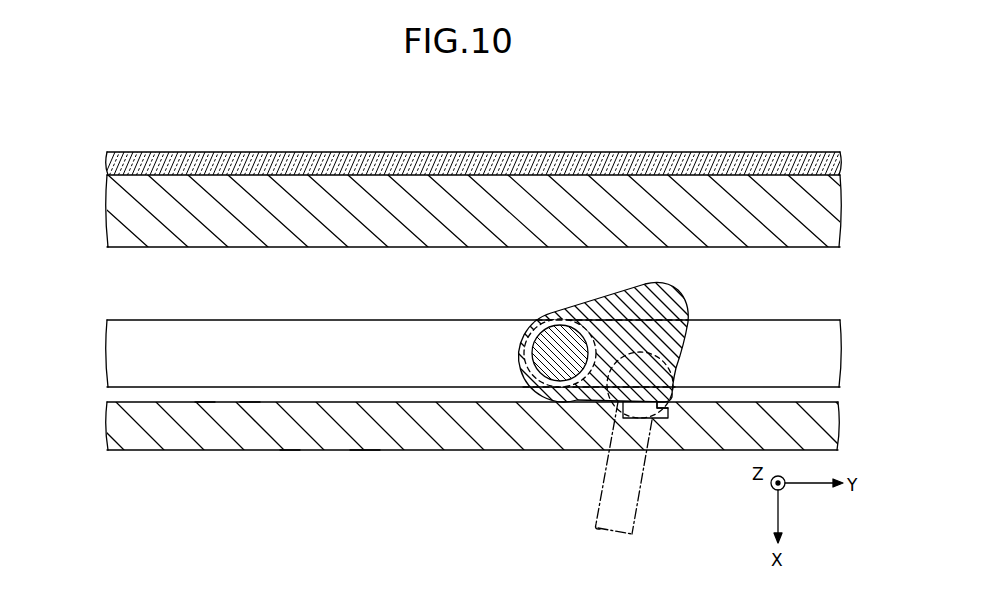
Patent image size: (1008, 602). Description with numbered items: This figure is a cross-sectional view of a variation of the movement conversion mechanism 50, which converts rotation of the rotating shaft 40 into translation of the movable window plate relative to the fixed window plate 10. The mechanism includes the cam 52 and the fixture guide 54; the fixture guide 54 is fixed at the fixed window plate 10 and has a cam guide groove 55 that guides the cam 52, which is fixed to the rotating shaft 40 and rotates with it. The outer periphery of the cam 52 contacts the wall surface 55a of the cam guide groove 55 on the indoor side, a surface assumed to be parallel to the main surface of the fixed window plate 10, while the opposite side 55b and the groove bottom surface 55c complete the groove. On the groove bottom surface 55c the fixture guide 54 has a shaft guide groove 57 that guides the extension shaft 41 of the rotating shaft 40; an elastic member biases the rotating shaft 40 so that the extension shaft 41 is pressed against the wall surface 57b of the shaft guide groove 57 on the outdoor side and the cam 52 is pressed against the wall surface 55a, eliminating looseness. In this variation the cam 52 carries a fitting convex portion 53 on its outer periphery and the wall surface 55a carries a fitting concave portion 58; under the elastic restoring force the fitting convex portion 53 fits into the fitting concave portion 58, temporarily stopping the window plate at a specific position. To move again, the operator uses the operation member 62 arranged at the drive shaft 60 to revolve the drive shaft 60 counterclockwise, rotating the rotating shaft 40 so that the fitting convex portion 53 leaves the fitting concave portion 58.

The fixed window plate 10 is at (330, 158).
The fixture guide 54 is at (423, 192).
The shaft guide groove 57 is at (414, 312).
The wall surface of the shaft guide groove on the outdoor side 57b is at (382, 324).
The cam guide groove 55 is at (316, 502).
The wall surface of the cam guide groove on the indoor side 55a is at (205, 412).
The second layer 55b is at (293, 247).
The groove bottom surface of the cam guide groove 55c is at (250, 394).
The movement conversion mechanism 50 is at (364, 470).
The cam 52 is at (677, 300).
The rotating shaft 40 is at (558, 367).
The extension shaft 41 is at (520, 360).
The drive shaft 60 is at (580, 390).
The fitting concave portion 58 is at (650, 420).
The fitting convex portion 53 is at (661, 412).
The operation member 62 is at (635, 505).